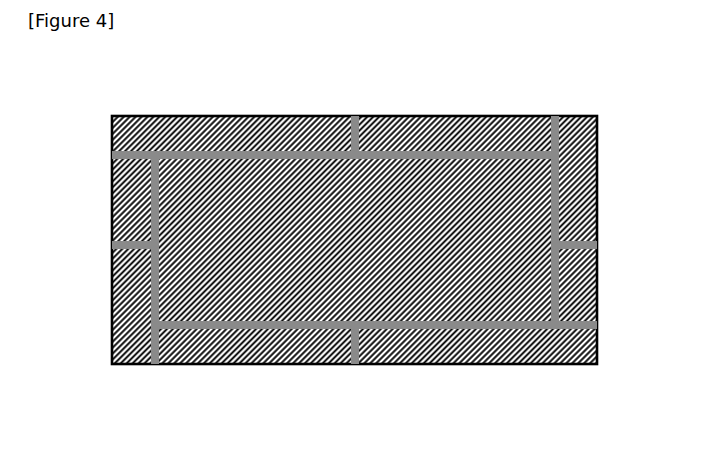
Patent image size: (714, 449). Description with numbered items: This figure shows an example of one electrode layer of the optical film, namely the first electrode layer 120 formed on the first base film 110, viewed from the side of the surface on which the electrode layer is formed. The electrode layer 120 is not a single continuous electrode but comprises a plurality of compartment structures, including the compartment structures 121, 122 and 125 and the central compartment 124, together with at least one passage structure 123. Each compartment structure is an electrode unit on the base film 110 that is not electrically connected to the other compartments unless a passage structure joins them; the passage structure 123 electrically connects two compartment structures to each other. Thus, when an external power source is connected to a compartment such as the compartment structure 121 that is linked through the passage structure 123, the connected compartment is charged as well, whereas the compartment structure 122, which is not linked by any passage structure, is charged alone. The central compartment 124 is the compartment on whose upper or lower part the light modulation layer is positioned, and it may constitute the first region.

The first base film 110 is at (147, 345).
The first electrode layer 120 is at (597, 180).
The compartment structure 121 is at (283, 366).
The compartment structure 122 is at (597, 350).
The passage structure 123 is at (111, 243).
The central compartment 124 is at (432, 308).
The compartment structure 125 is at (447, 115).